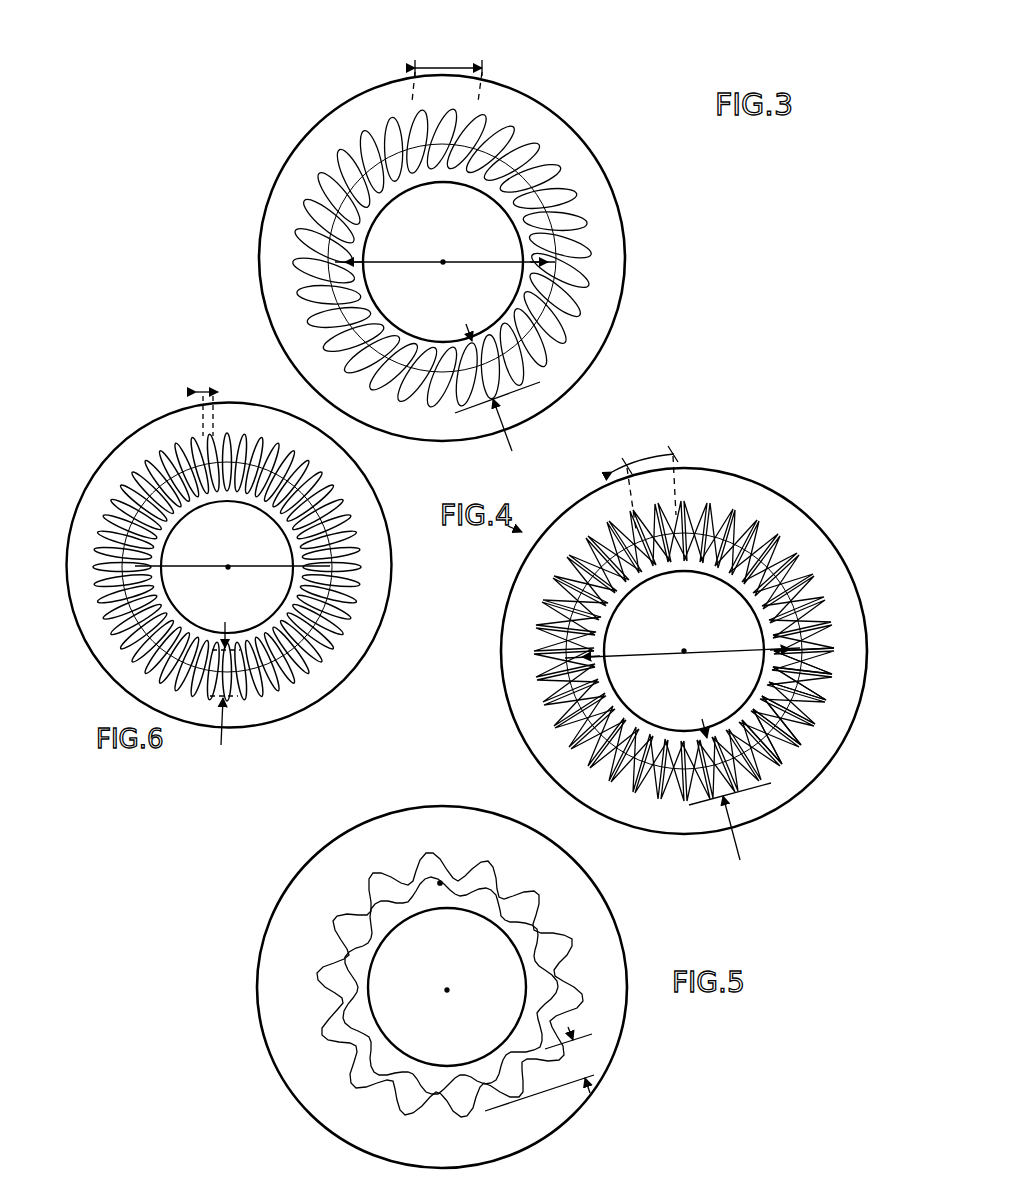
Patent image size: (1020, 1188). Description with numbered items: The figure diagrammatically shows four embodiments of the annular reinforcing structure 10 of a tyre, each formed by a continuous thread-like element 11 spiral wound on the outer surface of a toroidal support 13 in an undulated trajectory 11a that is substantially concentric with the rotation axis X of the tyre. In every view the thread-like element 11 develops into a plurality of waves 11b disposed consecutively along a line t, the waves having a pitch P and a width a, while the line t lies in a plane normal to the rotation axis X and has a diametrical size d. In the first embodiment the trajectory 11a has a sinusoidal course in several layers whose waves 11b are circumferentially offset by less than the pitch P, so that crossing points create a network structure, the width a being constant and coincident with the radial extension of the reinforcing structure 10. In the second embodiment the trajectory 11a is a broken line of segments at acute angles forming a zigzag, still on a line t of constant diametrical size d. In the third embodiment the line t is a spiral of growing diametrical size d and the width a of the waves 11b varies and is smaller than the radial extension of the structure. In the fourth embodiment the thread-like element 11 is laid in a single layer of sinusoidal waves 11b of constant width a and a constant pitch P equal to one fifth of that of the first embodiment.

In FIG. 3, the reinforcing structure 10 is at (490, 244).
In FIG. 4, the reinforcing structure 10 is at (684, 613).
In FIG. 6, the reinforcing structure 10 is at (242, 566).
In FIG. 5, the reinforcing structure 10 is at (489, 957).
In FIG. 3, the toroidal support 13 is at (530, 82).
In FIG. 4, the toroidal support 13 is at (838, 526).
In FIG. 6, the toroidal support 13 is at (360, 678).
In FIG. 5, the toroidal support 13 is at (318, 842).
In FIG. 3, the continuous thread-like element 11 is at (455, 254).
In FIG. 4, the continuous thread-like element 11 is at (685, 658).
In FIG. 6, the continuous thread-like element 11 is at (231, 528).
In FIG. 5, the continuous thread-like element 11 is at (387, 924).
In FIG. 3, the undulated trajectory 11a is at (568, 172).
In FIG. 4, the undulated trajectory 11a is at (810, 655).
In FIG. 6, the undulated trajectory 11a is at (132, 505).
In FIG. 5, the undulated trajectory 11a is at (430, 890).
In FIG. 3, the waves 11b is at (580, 326).
In FIG. 4, the waves 11b is at (775, 713).
In FIG. 6, the waves 11b is at (180, 460).
In FIG. 5, the waves 11b is at (320, 972).
In FIG. 3, the line t is at (372, 208).
In FIG. 4, the line t is at (582, 550).
In FIG. 6, the line t is at (300, 562).
In FIG. 3, the pitch P is at (415, 65).
In FIG. 4, the pitch P is at (645, 460).
In FIG. 6, the pitch P is at (207, 402).
In FIG. 3, the diametrical size d is at (443, 262).
In FIG. 4, the diametrical size d is at (684, 651).
In FIG. 6, the diametrical size d is at (228, 567).
In FIG. 3, the width a is at (520, 432).
In FIG. 4, the width a is at (750, 840).
In FIG. 6, the width a is at (225, 694).
In FIG. 5, the width a is at (594, 1055).
In FIG. 3, the rotation axis X is at (443, 262).
In FIG. 4, the rotation axis X is at (684, 651).
In FIG. 6, the rotation axis X is at (228, 567).
In FIG. 5, the rotation axis X is at (447, 990).